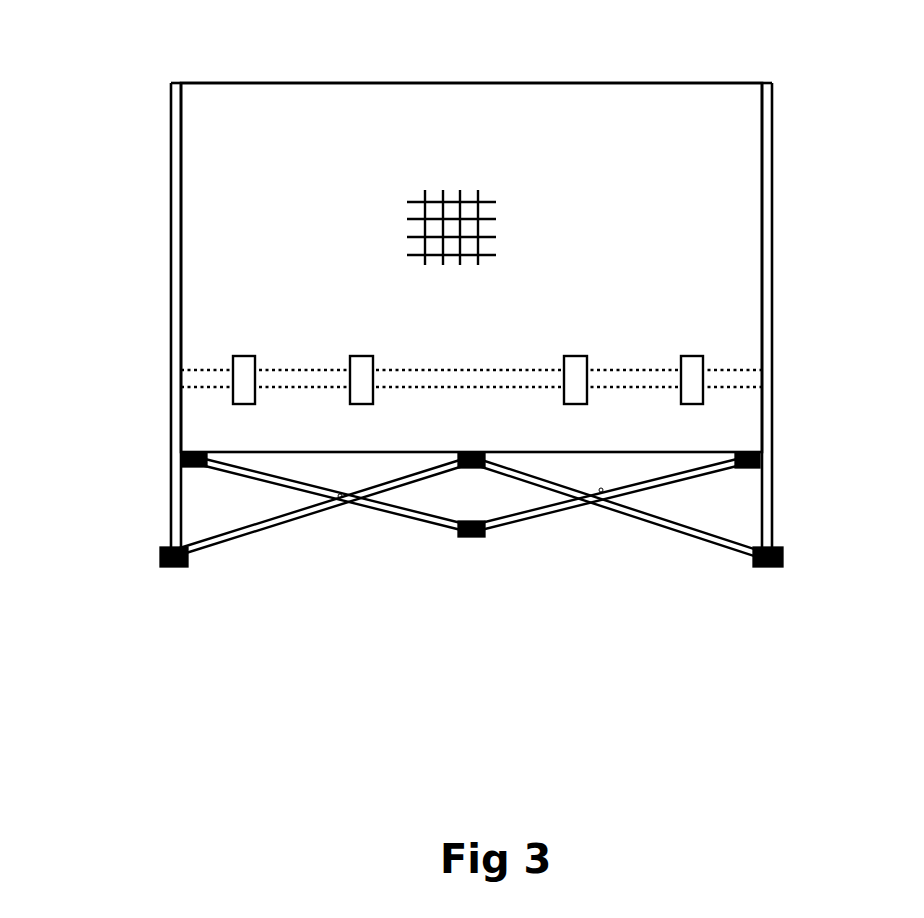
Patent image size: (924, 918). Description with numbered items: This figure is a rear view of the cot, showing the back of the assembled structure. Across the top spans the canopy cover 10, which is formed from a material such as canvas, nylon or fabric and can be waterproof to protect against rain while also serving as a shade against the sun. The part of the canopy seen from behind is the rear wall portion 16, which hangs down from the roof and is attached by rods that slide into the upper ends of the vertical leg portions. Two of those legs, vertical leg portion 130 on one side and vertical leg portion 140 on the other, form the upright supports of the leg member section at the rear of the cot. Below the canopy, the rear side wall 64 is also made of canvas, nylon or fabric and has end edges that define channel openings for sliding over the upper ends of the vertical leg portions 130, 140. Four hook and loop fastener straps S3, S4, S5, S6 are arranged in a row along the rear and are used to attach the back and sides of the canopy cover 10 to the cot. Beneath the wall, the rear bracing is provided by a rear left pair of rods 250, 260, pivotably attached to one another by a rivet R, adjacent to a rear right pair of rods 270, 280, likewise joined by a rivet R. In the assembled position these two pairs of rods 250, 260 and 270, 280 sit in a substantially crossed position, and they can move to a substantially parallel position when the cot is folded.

The canopy cover 10 is at (462, 147).
The rear wall portion 16 is at (265, 197).
The rear side wall 64 is at (727, 415).
The vertical leg portion 130 is at (171, 473).
The vertical leg portion 140 is at (772, 478).
The rear left rod 250 is at (222, 535).
The rear left rod 260 is at (258, 466).
The rear right rod 270 is at (545, 508).
The rear right rod 280 is at (545, 468).
The rivet R is at (338, 496).
The hook and loop fastener strap S3 is at (692, 356).
The hook and loop fastener strap S4 is at (575, 356).
The hook and loop fastener strap S5 is at (361, 356).
The hook and loop fastener strap S6 is at (244, 356).